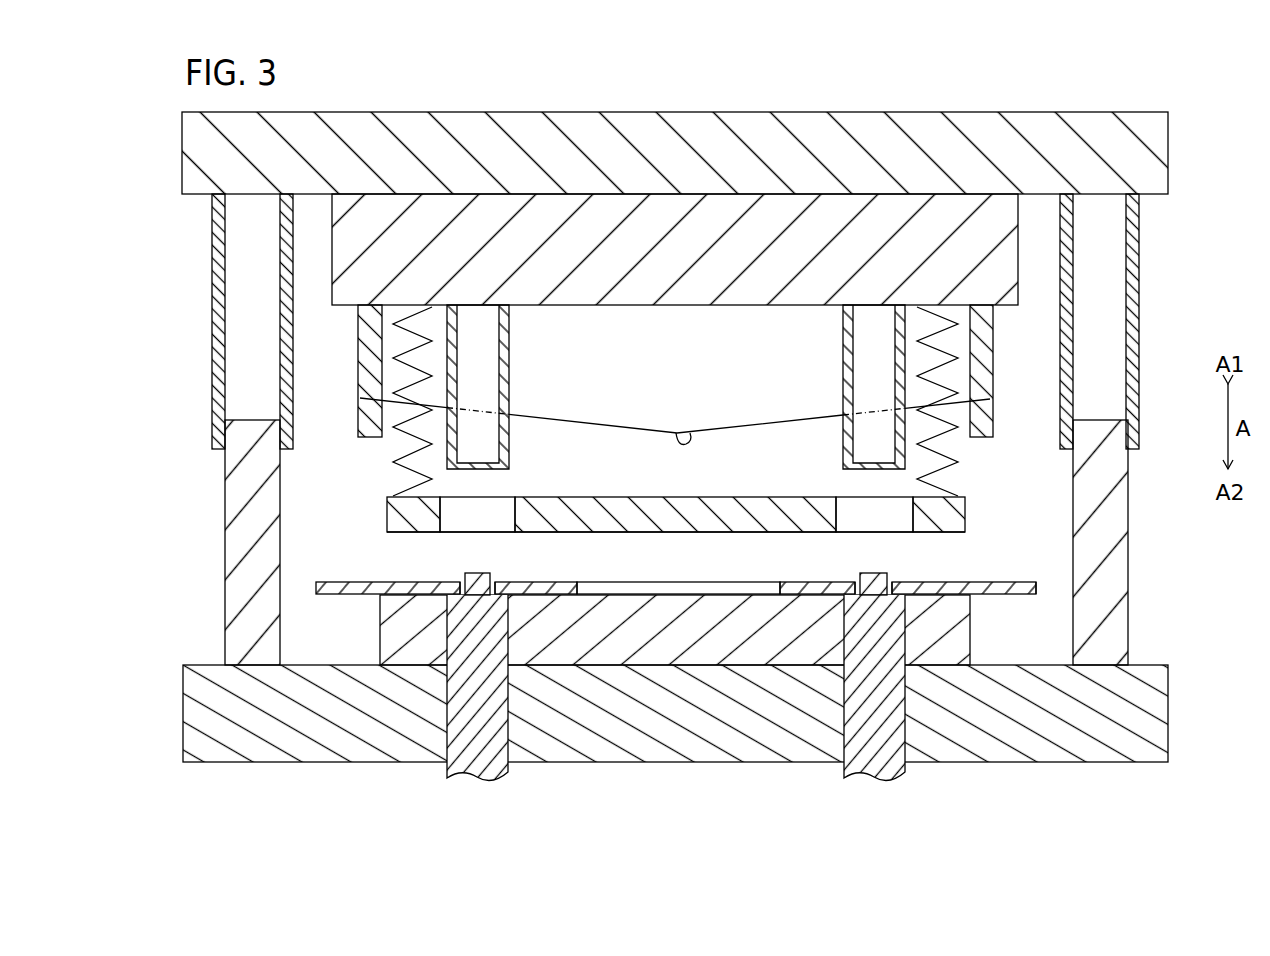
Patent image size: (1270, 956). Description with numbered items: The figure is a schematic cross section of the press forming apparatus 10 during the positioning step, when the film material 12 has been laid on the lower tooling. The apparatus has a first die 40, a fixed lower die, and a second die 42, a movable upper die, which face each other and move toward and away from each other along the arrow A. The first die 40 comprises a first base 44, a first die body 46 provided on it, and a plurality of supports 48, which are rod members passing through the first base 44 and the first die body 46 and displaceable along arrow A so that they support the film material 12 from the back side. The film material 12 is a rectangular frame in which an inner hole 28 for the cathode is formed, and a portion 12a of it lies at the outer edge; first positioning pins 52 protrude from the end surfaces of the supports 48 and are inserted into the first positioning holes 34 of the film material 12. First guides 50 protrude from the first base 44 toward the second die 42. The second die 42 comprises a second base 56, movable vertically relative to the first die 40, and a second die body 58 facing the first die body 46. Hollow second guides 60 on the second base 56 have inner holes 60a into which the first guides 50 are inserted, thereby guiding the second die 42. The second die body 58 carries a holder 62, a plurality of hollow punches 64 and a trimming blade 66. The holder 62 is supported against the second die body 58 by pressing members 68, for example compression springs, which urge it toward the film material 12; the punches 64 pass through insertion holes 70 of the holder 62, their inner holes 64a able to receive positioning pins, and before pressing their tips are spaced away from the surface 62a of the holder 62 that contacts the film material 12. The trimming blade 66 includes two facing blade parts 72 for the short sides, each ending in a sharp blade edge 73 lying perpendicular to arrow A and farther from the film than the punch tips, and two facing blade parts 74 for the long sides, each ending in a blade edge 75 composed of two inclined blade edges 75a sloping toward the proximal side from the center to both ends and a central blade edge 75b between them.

The press forming apparatus 10 is at (397, 88).
The film material 12 is at (686, 586).
The end portion of plate 12a is at (1022, 582).
The inner hole 28 is at (611, 583).
The first positioning holes 34 is at (482, 580).
The first die 40 is at (1171, 660).
The second die 42 is at (1170, 106).
The first base 44 is at (1134, 748).
The first die body 46 is at (963, 633).
The supports 48 is at (475, 770).
The first guides 50 is at (237, 510).
The first positioning pins 52 is at (487, 573).
The second base 56 is at (910, 122).
The second die body 58 is at (745, 212).
The second guides 60 is at (218, 258).
The inner holes 60a is at (238, 223).
The holder 62 is at (607, 497).
The surface of holder 62a is at (673, 533).
The punches 64 is at (510, 345).
The inner holes 64a is at (485, 327).
The trimming blade 66 is at (333, 327).
The pressing members 68 is at (400, 472).
The insertion holes 70 is at (478, 510).
The blade parts 72 is at (359, 338).
The blade edge 73 is at (382, 437).
The blade parts 74 is at (575, 400).
The blade edge 75 is at (771, 385).
The inclined blade edges 75a is at (645, 433).
The central blade edge 75b is at (690, 433).